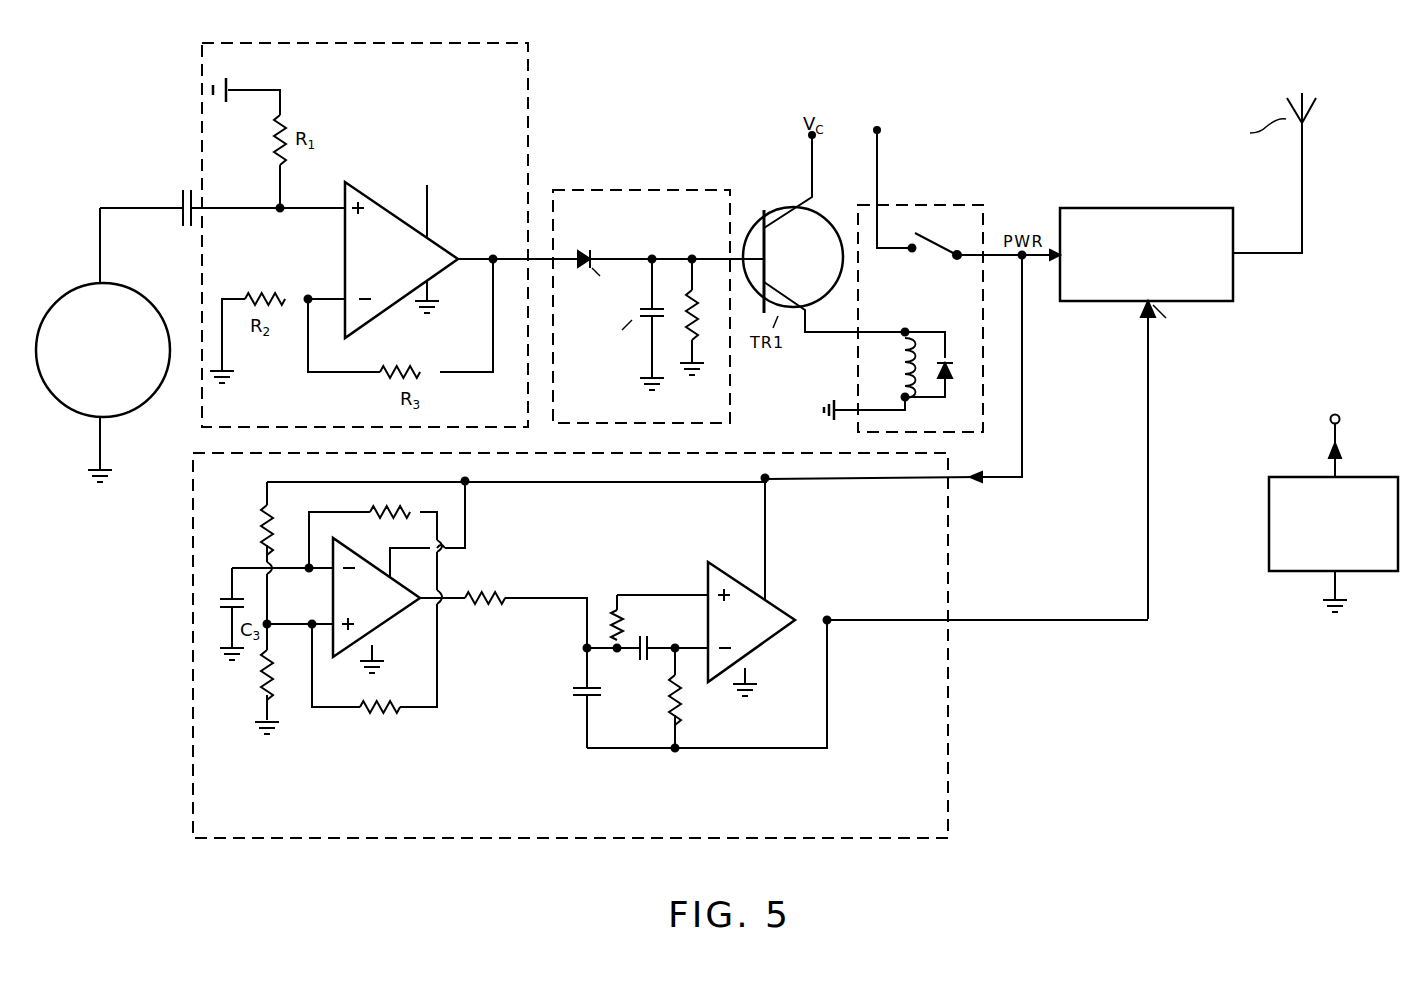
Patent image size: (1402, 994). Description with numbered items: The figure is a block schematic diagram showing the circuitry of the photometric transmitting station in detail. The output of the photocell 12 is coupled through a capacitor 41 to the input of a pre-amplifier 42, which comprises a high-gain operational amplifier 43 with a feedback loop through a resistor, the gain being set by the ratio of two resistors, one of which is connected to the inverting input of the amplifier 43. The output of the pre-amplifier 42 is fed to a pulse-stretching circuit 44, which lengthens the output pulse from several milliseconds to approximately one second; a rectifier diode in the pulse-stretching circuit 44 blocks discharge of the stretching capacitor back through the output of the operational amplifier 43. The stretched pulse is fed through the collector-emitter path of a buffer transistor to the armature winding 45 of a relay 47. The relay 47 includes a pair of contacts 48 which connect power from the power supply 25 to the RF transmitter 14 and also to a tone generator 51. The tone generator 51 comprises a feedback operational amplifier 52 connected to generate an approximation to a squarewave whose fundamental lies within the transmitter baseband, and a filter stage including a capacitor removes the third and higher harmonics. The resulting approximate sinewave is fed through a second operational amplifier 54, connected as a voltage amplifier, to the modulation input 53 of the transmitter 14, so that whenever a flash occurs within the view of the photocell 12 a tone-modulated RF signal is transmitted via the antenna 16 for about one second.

The photocell 12 is at (75, 298).
The coupling capacitor C1 41 is at (178, 200).
The pre-amplifier 42 is at (472, 43).
The operational amplifier 43 is at (434, 242).
The pulse-stretching circuit 44 is at (730, 193).
The relay coil 45 is at (900, 373).
The relay 47 is at (968, 205).
The relay contacts 48 is at (933, 246).
The RF transmitter 14 is at (1153, 207).
The antenna 16 is at (1305, 140).
The power supply 25 is at (1288, 477).
The tone generator 51 is at (193, 595).
The feedback operational amplifier 52 is at (386, 622).
The modulation input 53 is at (1140, 309).
The second operational amplifier 54 is at (778, 610).